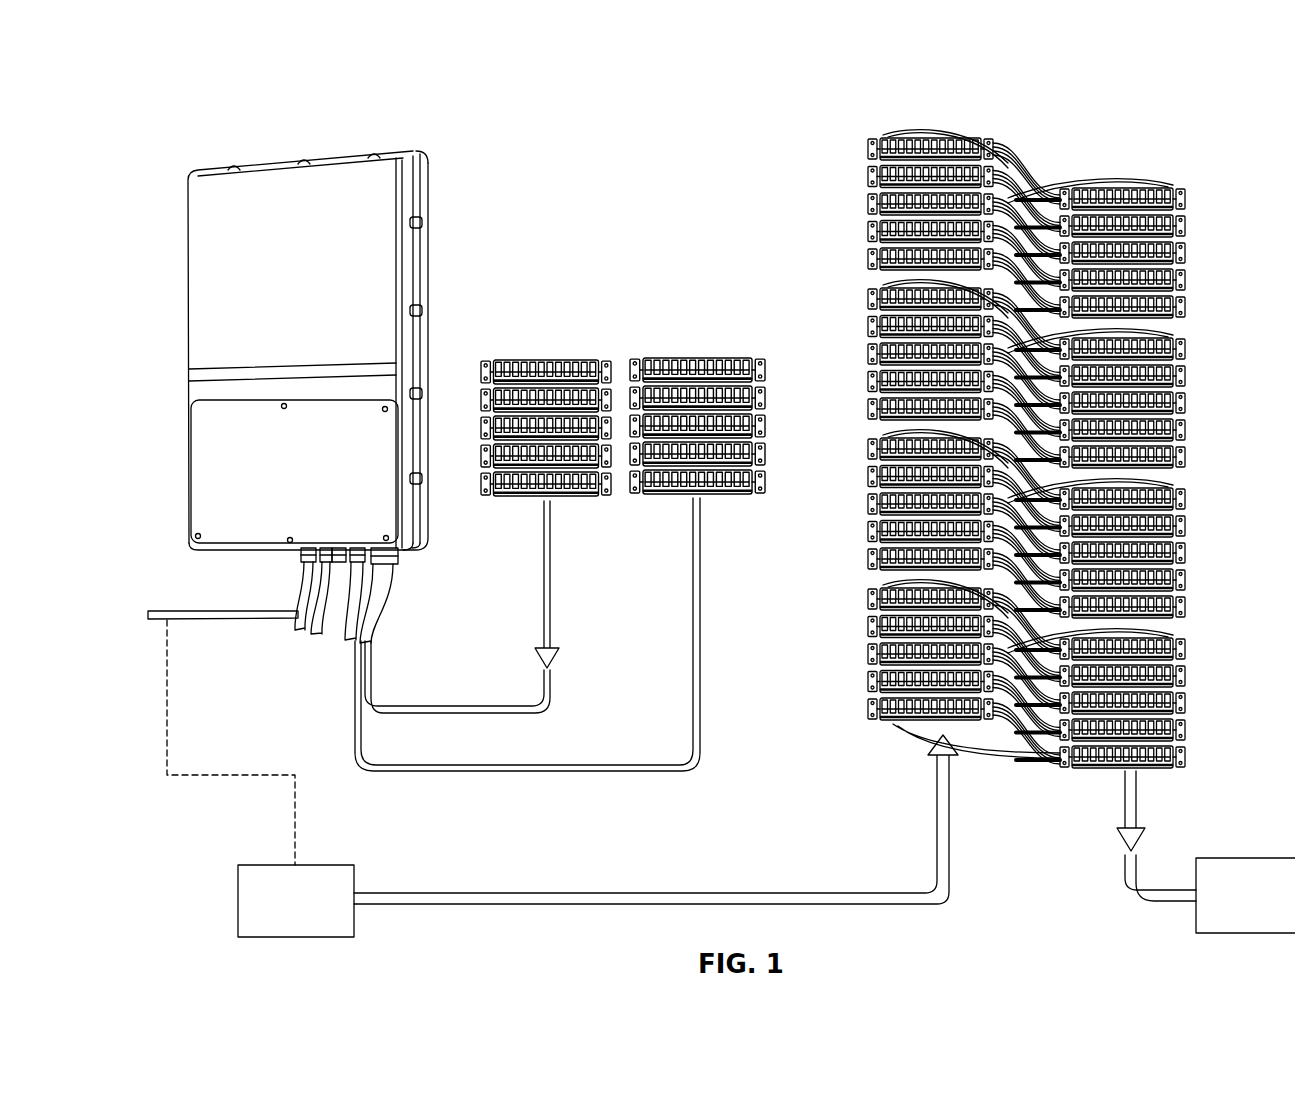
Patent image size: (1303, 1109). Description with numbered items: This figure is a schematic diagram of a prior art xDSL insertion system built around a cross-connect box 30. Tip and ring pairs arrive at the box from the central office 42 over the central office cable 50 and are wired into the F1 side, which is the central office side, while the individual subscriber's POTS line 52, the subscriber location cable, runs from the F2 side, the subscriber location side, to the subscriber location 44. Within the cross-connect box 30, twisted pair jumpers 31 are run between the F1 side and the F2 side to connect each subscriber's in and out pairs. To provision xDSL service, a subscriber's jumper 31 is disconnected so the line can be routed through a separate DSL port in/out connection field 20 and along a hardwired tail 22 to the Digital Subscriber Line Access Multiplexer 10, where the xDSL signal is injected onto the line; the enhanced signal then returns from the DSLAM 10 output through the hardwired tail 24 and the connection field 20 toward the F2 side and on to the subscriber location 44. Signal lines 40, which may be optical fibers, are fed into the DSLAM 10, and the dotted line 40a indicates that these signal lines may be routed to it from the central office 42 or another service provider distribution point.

The Digital Subscriber Line Access Multiplexer (DSLAM) 10 is at (422, 170).
The connection field 20 is at (720, 340).
The hardwired tail 22 is at (543, 598).
The hardwired tail 24 is at (693, 650).
The cross-connect box 30 is at (1112, 158).
The jumpers 31 is at (1030, 738).
The signal lines 40 is at (195, 603).
The dotted line 40a is at (213, 767).
The central office 42 is at (276, 857).
The subscriber location 44 is at (1243, 850).
The central office cable 50 is at (640, 885).
The subscriber location cable 52 is at (1152, 880).
The F1 side F1 is at (858, 200).
The F2 side F2 is at (1180, 245).